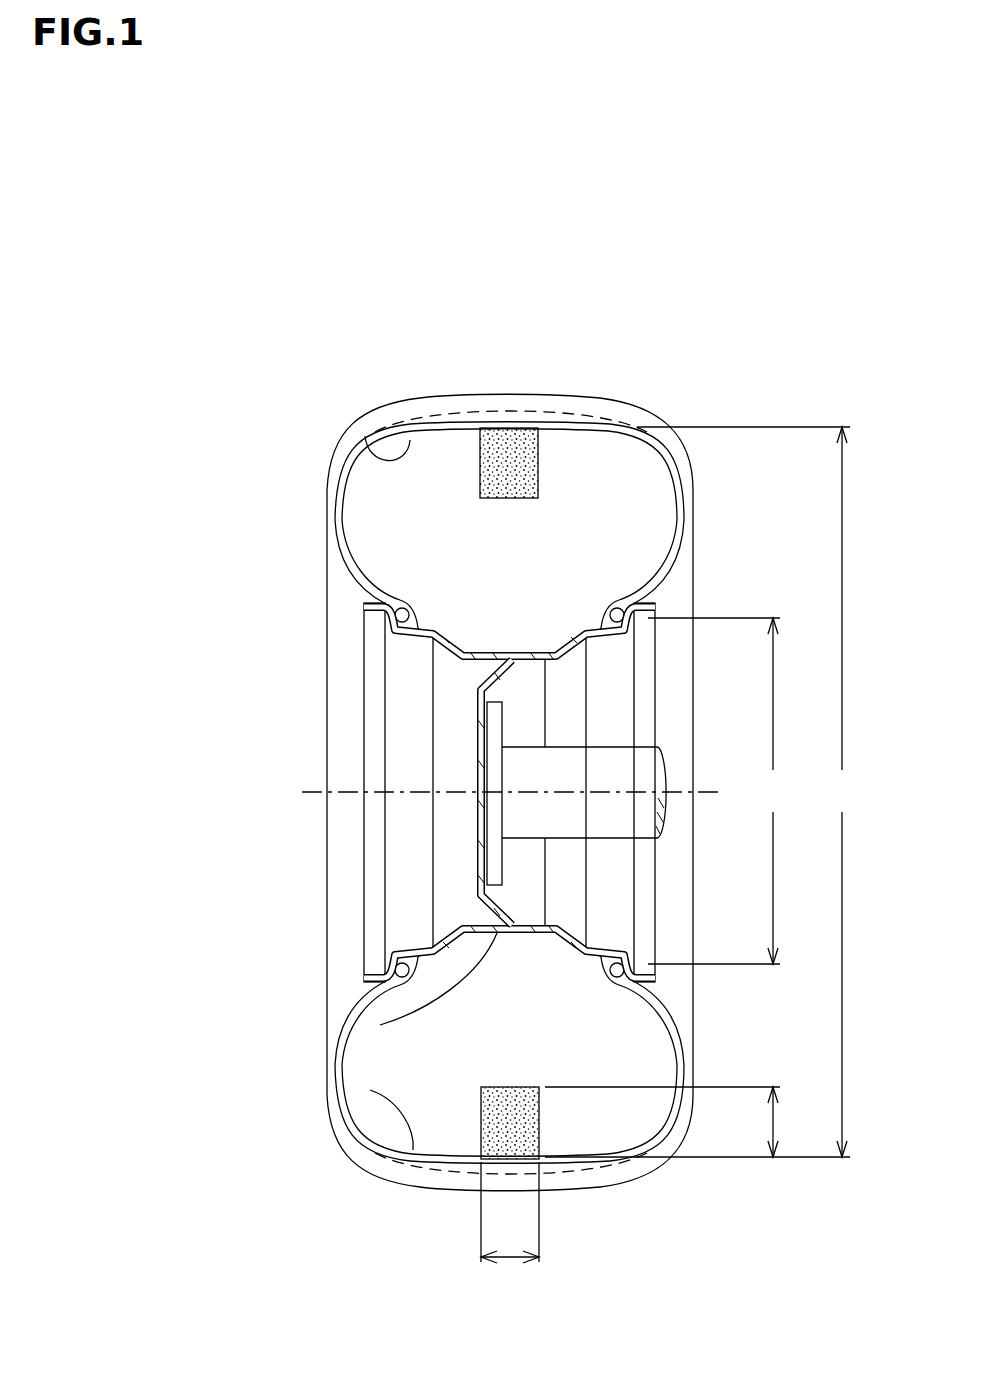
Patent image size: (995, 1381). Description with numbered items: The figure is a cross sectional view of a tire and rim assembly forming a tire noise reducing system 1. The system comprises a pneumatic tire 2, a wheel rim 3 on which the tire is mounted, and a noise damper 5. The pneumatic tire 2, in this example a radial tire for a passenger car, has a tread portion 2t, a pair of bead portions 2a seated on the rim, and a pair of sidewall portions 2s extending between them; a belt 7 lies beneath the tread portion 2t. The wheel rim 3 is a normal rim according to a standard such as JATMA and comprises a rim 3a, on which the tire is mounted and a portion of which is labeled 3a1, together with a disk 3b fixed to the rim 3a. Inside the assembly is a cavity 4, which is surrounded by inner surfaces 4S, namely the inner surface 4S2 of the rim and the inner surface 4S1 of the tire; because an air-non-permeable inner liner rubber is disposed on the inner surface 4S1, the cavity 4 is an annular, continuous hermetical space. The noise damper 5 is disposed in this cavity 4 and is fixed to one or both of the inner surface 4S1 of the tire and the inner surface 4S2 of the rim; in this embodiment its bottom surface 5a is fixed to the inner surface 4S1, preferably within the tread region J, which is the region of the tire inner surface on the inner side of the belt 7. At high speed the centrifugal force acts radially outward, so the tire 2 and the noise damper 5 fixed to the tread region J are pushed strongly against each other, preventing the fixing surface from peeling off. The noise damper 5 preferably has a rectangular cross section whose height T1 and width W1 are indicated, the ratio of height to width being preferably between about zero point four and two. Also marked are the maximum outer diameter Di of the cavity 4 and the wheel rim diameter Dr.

The tire noise reducing system 1 is at (275, 750).
The pneumatic tire 2 is at (340, 552).
The sidewall portion 2s is at (328, 492).
The tread portion 2t is at (508, 393).
The bead portion 2a is at (655, 585).
The wheel rim 3 is at (258, 608).
The rim 3a is at (420, 642).
The bead seat of rim flange 3a1 is at (655, 612).
The disk 3b is at (473, 723).
The cavity 4 is at (523, 586).
The tube sheet 4S is at (192, 1010).
The inner surface of the tire 4S1 is at (370, 1090).
The inner surface of the rim 4S2 is at (380, 1025).
The noise damper 5 is at (478, 465).
The bottom surface of the noise damper 5a is at (532, 426).
The belt 7 is at (598, 405).
The tread region J is at (362, 448).
The maximum outer diameter of the cavity Di is at (702, 792).
The wheel rim diameter Dr is at (719, 791).
The height of the noise damper T1 is at (775, 1117).
The width of the noise damper W1 is at (510, 1259).